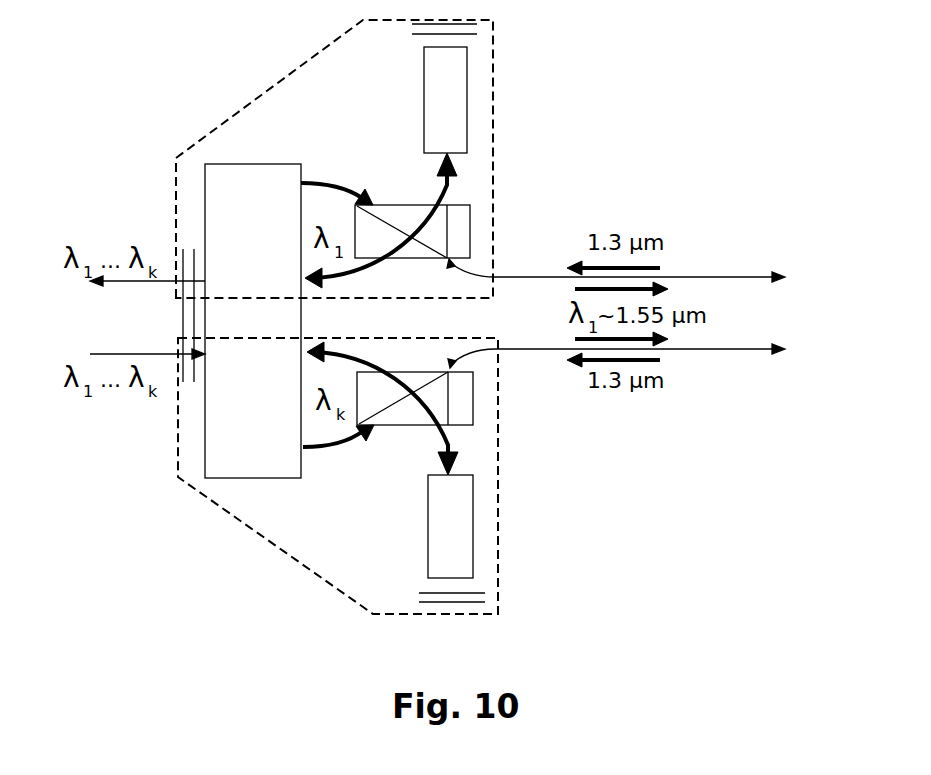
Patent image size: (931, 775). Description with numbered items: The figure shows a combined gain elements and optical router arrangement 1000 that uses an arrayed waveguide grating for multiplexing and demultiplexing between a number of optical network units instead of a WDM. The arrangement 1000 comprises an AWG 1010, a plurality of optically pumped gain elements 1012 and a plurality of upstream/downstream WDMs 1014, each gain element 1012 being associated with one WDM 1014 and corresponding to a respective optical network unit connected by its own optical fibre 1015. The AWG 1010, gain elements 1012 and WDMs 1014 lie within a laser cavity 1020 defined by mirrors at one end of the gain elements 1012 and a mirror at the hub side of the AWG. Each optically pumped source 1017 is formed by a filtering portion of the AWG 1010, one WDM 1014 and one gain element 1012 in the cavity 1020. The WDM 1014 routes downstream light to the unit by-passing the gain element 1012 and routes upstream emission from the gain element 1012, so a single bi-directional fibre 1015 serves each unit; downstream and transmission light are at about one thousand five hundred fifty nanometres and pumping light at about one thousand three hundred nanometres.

The combined gain elements and optical router arrangement 1000 is at (633, 160).
The arrayed waveguide grating (AWG) 1010 is at (205, 463).
The optically pumped gain element 1012 is at (467, 77).
The upstream/downstream WDM 1014 is at (470, 230).
The optical fibre 1015 is at (708, 277).
The optically pumped source 1017 is at (493, 115).
The laser cavity 1020 is at (493, 21).